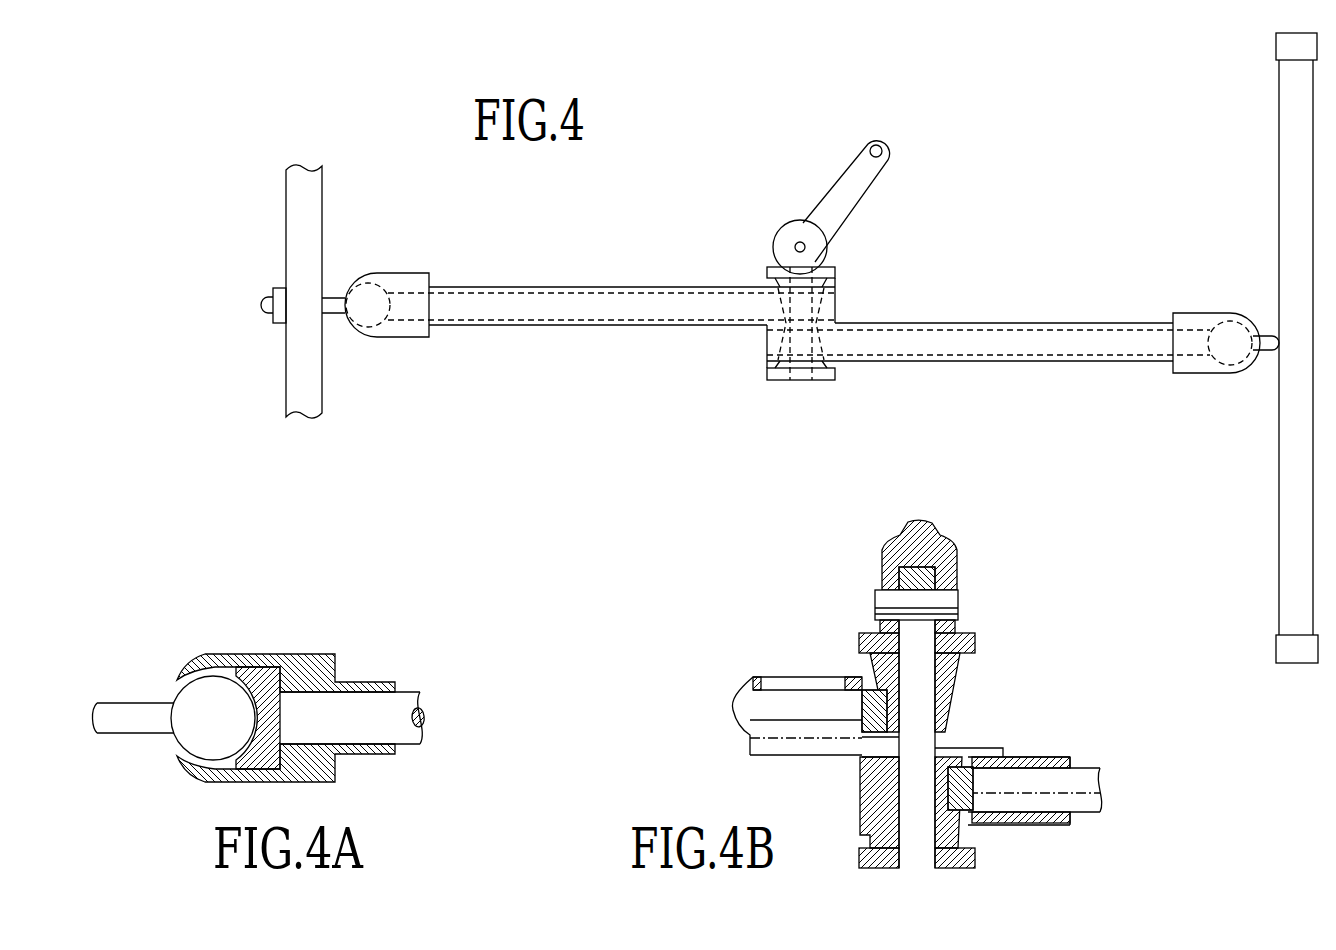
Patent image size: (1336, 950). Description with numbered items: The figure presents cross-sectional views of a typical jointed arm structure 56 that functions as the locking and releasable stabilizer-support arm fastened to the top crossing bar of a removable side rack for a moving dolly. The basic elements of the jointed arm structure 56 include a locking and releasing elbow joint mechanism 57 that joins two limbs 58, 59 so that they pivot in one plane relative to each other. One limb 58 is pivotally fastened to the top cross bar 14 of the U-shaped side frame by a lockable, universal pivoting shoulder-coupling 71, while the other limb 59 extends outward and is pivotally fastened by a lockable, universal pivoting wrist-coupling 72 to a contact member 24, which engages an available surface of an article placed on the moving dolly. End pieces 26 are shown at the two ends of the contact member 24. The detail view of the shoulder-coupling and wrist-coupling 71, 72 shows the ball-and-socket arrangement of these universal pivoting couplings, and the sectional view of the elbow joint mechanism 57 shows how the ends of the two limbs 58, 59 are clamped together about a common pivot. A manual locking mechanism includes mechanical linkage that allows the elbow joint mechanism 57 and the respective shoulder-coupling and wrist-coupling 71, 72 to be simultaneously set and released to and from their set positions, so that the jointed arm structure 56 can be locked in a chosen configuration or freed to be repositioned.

In FIG. 4, the top cross bar 14 is at (286, 199).
In FIG. 4, the contact member 24 is at (1279, 134).
In FIG. 4, the rail end caps 26 is at (1276, 47).
In FIG. 4, the jointed arm structure 56 is at (812, 285).
In FIG. 4, the elbow joint mechanism 57 is at (860, 276).
In FIG. 4B, the elbow joint mechanism 57 is at (840, 625).
In FIG. 4, the limb 58 is at (647, 326).
In FIG. 4B, the limb 58 is at (787, 675).
In FIG. 4, the limb 59 is at (1063, 362).
In FIG. 4B, the limb 59 is at (1040, 826).
In FIG. 4, the shoulder-coupling 71 is at (396, 273).
In FIG. 4A, the shoulder-coupling 71 is at (157, 639).
In FIG. 4, the wrist-coupling 72 is at (1192, 313).
In FIG. 4A, the wrist-coupling 72 is at (257, 675).